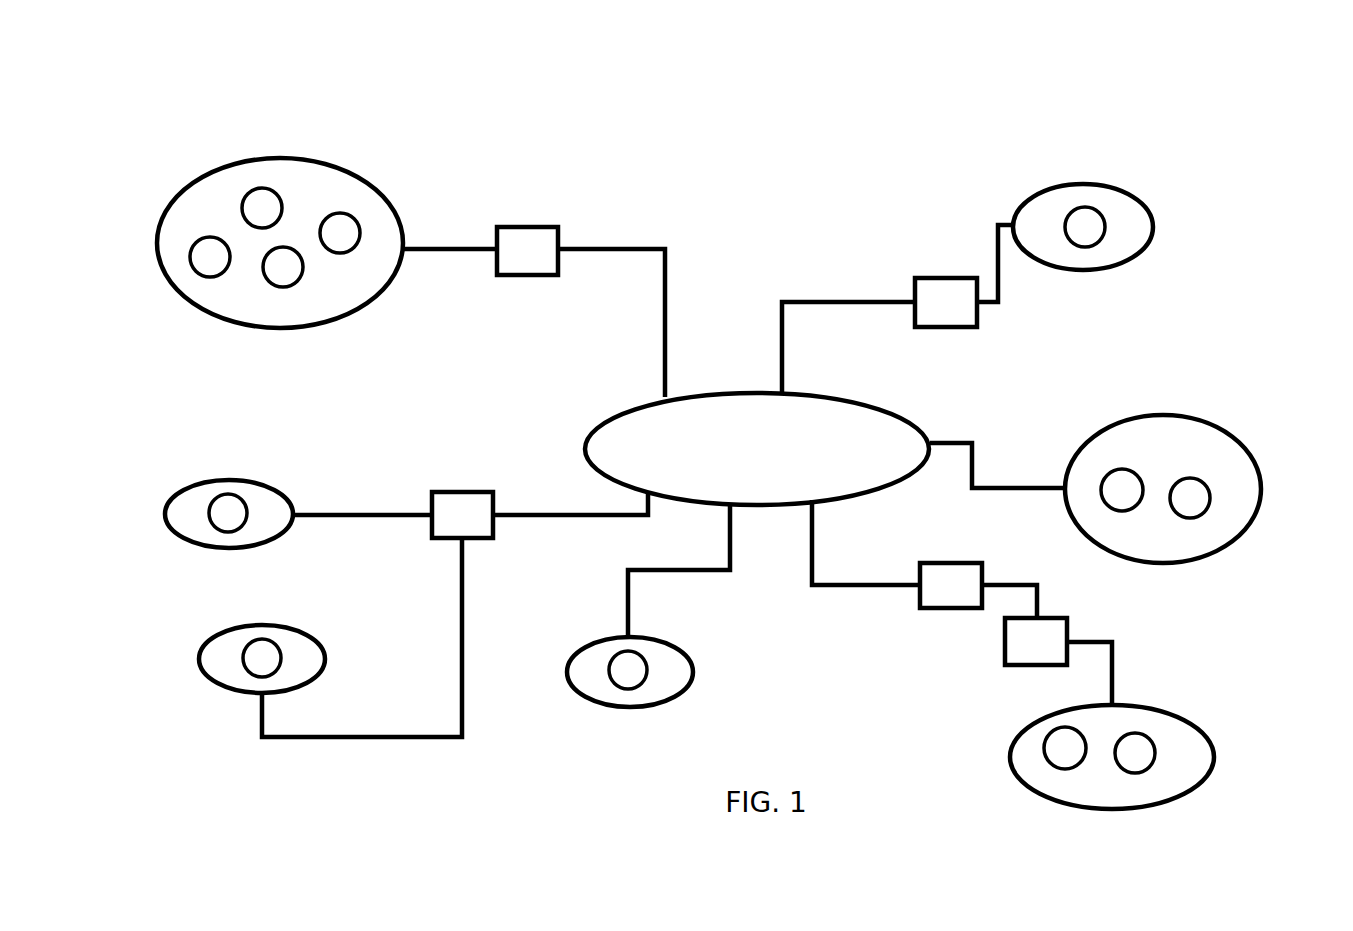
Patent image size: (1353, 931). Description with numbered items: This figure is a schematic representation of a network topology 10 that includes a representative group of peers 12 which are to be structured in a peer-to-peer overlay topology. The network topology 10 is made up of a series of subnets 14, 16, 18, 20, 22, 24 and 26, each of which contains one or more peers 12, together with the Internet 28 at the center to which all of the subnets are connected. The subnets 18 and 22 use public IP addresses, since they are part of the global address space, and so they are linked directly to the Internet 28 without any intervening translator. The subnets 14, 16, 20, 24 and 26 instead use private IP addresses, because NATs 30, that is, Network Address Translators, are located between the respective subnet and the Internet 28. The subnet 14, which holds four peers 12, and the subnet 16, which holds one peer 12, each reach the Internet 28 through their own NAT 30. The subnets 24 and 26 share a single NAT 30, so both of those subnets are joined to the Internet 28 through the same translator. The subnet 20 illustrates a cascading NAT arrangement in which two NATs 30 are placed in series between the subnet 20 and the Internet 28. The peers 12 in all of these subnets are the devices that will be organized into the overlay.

The network topology 10 is at (1200, 138).
The peers 12 is at (720, 471).
The subnet 14 is at (210, 170).
The subnet 16 is at (1042, 190).
The subnet 18 is at (1095, 437).
The subnet 20 is at (1010, 752).
The subnet 22 is at (571, 672).
The subnet 24 is at (208, 660).
The subnet 26 is at (170, 516).
The Internet 28 is at (727, 392).
The NAT 30 is at (524, 227).